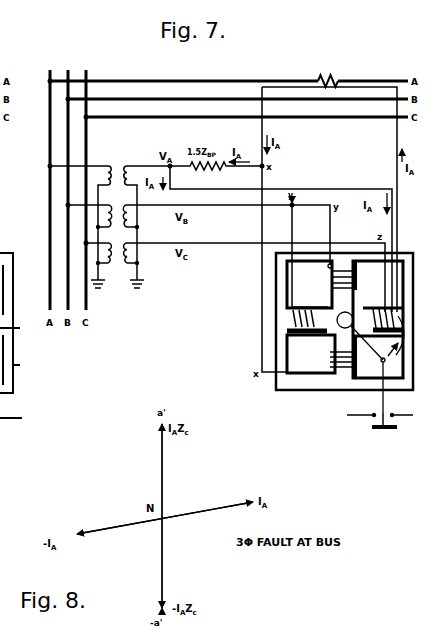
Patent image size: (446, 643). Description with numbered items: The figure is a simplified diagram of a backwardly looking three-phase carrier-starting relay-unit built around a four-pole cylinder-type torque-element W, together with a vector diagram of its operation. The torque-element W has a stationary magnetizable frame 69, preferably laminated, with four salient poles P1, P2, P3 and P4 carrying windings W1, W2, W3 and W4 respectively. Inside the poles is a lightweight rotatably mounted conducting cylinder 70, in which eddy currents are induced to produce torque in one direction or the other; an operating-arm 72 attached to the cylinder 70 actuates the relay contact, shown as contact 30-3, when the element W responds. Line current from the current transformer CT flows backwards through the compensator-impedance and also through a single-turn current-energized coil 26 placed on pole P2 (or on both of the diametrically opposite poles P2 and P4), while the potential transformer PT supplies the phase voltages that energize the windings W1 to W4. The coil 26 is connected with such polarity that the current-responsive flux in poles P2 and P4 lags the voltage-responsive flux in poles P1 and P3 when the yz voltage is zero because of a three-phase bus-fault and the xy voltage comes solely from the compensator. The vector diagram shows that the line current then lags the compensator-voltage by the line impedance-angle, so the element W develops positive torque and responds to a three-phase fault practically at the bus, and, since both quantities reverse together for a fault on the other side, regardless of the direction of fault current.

The current-energized coil 26 is at (387, 336).
The stationary magnetizable frame 69 is at (277, 383).
The cylinder 70 is at (353, 306).
The operating-arm 72 is at (368, 369).
The salient pole P1 is at (364, 275).
The salient pole P2 is at (209, 351).
The salient pole P3 is at (342, 379).
The salient pole P4 is at (307, 340).
The winding W1 is at (330, 279).
The winding W2 is at (379, 313).
The winding W3 is at (332, 360).
The winding W4 is at (303, 312).
The torque-element W is at (302, 410).
The current transformer CT is at (336, 76).
The potential transformer PT is at (97, 218).
The contact 30-3' 30-3 is at (380, 430).